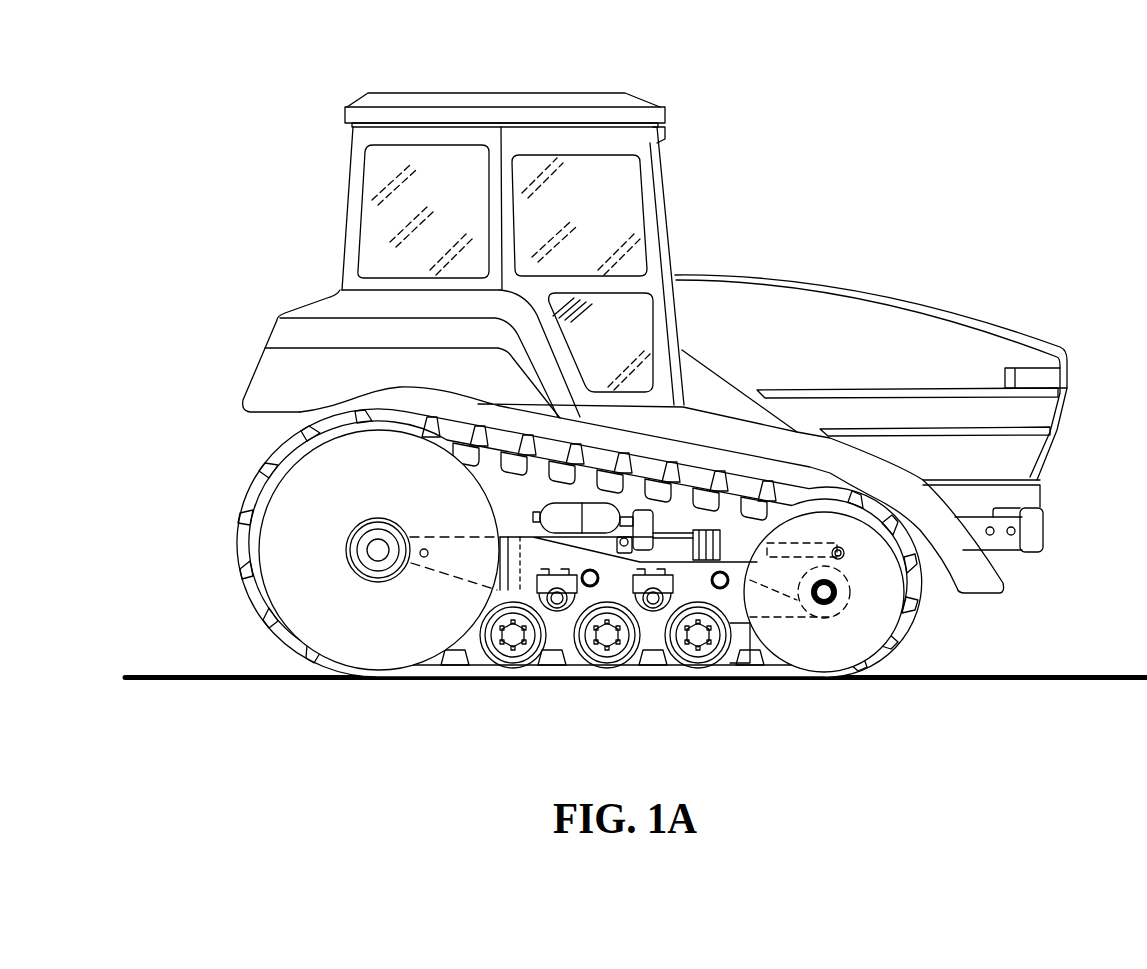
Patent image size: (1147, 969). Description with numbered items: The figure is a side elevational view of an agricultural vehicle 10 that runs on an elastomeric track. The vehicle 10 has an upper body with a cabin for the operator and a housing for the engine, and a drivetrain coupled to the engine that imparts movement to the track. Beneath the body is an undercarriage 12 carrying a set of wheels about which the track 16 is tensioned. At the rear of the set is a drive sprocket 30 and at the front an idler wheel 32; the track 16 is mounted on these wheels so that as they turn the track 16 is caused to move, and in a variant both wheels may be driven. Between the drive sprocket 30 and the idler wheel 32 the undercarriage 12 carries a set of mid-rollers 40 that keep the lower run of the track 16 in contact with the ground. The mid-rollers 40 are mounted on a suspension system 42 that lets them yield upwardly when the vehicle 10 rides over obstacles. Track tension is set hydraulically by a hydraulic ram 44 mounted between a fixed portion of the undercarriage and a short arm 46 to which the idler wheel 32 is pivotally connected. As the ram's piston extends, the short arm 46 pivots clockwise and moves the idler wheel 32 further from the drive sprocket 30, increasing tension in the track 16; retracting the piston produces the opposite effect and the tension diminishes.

The vehicle 10 is at (836, 131).
The undercarriage 12 is at (1036, 532).
The track 16 is at (900, 645).
The drive sprocket 30 is at (375, 652).
The idler wheel 32 is at (824, 652).
The mid-rollers 40 is at (522, 652).
The suspension system 42 is at (735, 597).
The hydraulic ram 44 is at (672, 542).
The short arm 46 is at (835, 572).